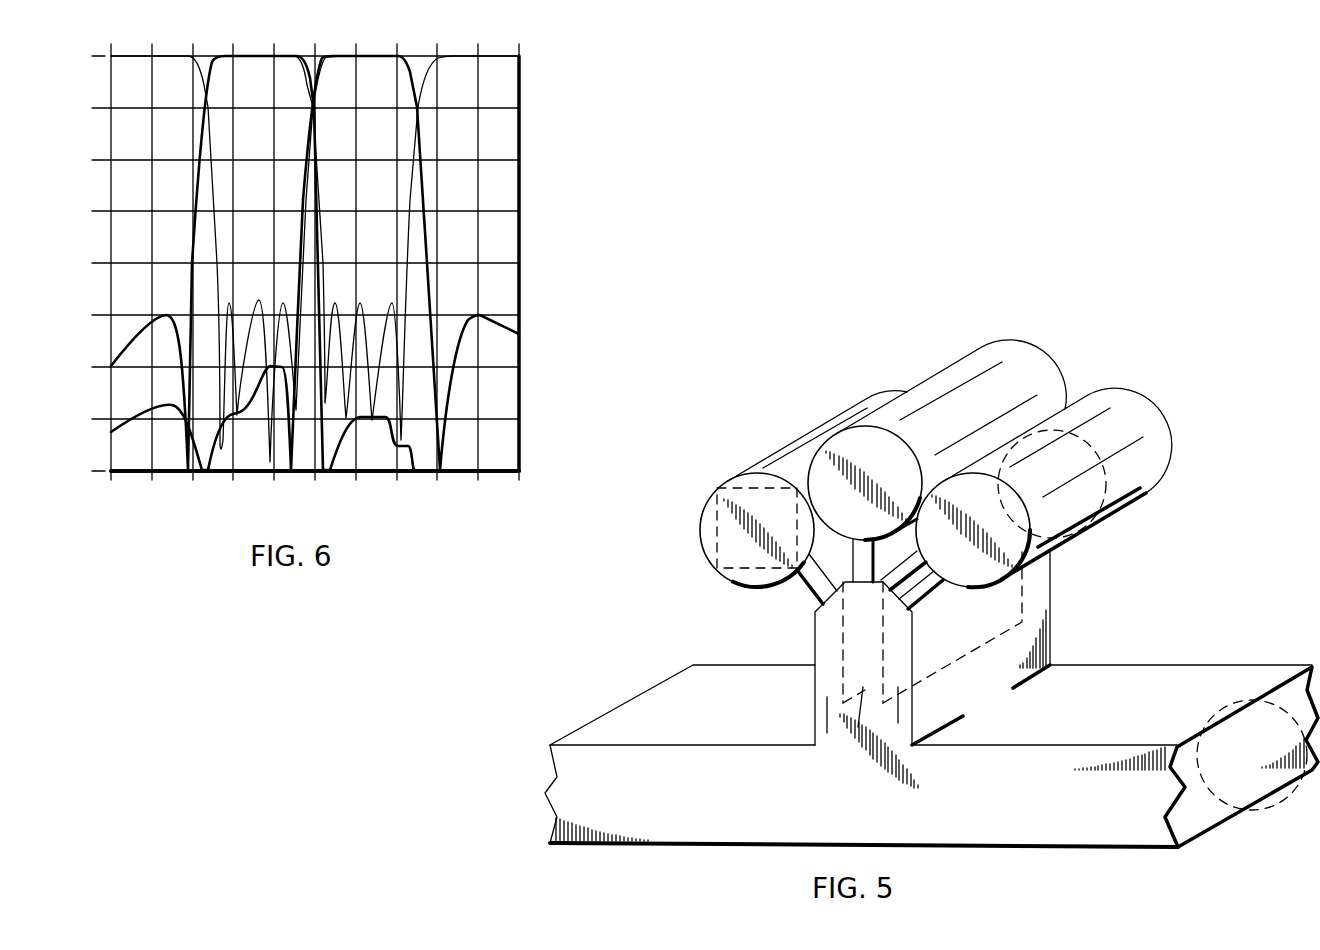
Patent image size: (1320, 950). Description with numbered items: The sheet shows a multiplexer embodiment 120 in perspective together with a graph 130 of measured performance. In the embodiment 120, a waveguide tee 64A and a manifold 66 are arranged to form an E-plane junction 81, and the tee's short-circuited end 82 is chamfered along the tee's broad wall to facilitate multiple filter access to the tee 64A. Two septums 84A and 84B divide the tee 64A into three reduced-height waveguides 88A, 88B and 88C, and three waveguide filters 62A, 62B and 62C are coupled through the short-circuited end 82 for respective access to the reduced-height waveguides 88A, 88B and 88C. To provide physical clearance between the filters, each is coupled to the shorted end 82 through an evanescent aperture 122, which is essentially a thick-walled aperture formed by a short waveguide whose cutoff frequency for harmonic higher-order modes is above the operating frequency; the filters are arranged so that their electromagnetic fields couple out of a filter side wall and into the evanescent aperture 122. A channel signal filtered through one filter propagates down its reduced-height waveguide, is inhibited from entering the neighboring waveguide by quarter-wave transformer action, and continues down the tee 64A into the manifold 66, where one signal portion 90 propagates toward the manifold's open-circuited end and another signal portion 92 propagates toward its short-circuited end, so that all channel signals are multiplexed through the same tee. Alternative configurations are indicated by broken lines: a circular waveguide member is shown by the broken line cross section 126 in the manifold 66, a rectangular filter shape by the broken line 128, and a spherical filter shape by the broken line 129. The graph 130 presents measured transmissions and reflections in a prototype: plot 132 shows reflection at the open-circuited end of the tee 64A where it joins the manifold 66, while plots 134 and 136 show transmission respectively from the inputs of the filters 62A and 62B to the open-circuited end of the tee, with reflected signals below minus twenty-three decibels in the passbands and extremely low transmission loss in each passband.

In FIG. 6, the graph 130 is at (523, 164).
In FIG. 6, the plot 132 is at (412, 236).
In FIG. 6, the plot 134 is at (202, 185).
In FIG. 6, the plot 136 is at (428, 183).
In FIG. 5, the waveguide filter 62A is at (1105, 405).
In FIG. 5, the waveguide filter 62B is at (917, 398).
In FIG. 5, the waveguide filter 62C is at (795, 437).
In FIG. 5, the broken line 128 is at (740, 488).
In FIG. 5, the broken line 129 is at (1107, 473).
In FIG. 5, the evanescent aperture 122 is at (803, 592).
In FIG. 5, the short-circuited end 82 is at (933, 598).
In FIG. 5, the septum 84A is at (883, 638).
In FIG. 5, the septum 84B is at (843, 618).
In FIG. 5, the tee 64A is at (815, 695).
In FIG. 5, the reduced-height waveguide 88A is at (898, 723).
In FIG. 5, the reduced-height waveguide 88B is at (858, 727).
In FIG. 5, the reduced-height waveguide 88C is at (827, 733).
In FIG. 5, the E-plane junction 81 is at (1061, 651).
In FIG. 5, the multiplexer embodiment 120 is at (1064, 602).
In FIG. 5, the broken line cross section 126 is at (1243, 700).
In FIG. 5, the signal portion 90 is at (1292, 758).
In FIG. 5, the signal portion 92 is at (550, 755).
In FIG. 5, the manifold 66 is at (600, 818).